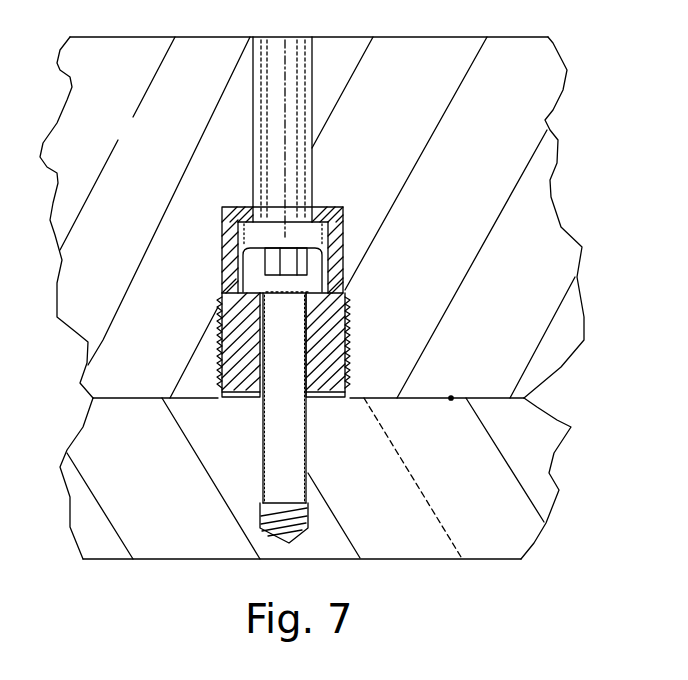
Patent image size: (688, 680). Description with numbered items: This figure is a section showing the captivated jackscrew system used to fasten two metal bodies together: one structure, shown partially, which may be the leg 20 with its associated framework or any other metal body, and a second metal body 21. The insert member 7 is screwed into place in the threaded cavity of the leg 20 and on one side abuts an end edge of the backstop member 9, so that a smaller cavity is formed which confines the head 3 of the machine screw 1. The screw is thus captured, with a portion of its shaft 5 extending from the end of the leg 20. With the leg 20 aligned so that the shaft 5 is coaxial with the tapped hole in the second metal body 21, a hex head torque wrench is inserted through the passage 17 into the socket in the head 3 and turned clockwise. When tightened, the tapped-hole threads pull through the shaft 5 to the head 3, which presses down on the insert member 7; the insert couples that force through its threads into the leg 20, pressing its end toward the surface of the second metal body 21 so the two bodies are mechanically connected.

The machine screw 1 is at (305, 365).
The head 3 is at (273, 248).
The shaft 5 is at (263, 437).
The insert member 7 is at (350, 314).
The backstop member 9 is at (344, 227).
The passage 17 is at (257, 57).
The leg 20 is at (62, 113).
The second metal body 21 is at (68, 508).